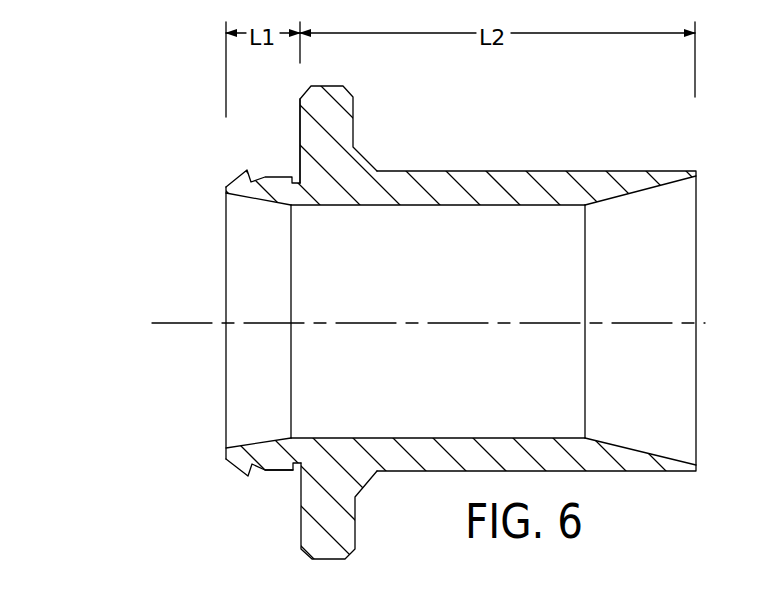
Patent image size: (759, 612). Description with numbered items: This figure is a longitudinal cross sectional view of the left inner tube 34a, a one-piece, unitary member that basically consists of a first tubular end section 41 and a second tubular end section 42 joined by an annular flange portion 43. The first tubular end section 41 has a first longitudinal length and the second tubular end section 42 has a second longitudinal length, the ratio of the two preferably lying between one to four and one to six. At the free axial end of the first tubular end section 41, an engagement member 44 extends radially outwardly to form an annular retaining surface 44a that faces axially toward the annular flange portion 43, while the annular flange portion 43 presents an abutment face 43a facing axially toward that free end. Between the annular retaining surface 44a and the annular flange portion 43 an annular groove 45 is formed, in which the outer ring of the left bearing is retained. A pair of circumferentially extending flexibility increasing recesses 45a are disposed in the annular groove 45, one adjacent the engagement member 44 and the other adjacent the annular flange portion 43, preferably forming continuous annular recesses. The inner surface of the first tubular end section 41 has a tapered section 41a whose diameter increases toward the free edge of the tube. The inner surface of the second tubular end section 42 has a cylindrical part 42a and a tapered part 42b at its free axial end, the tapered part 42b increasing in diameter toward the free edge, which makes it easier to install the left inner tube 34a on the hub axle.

The left inner tube 34a is at (584, 147).
The first tubular end section 41 is at (270, 160).
The tapered section of inner surface 41a is at (258, 200).
The second tubular end section 42 is at (470, 170).
The cylindrical part 42a is at (418, 206).
The tapered part 42b is at (641, 196).
The annular flange portion 43 is at (328, 86).
The abutment face 43a is at (300, 128).
The engagement member 44 is at (240, 472).
The annular retaining surface 44a is at (265, 474).
The annular groove 45 is at (284, 494).
The flexibility increasing recesses 45a is at (260, 466).